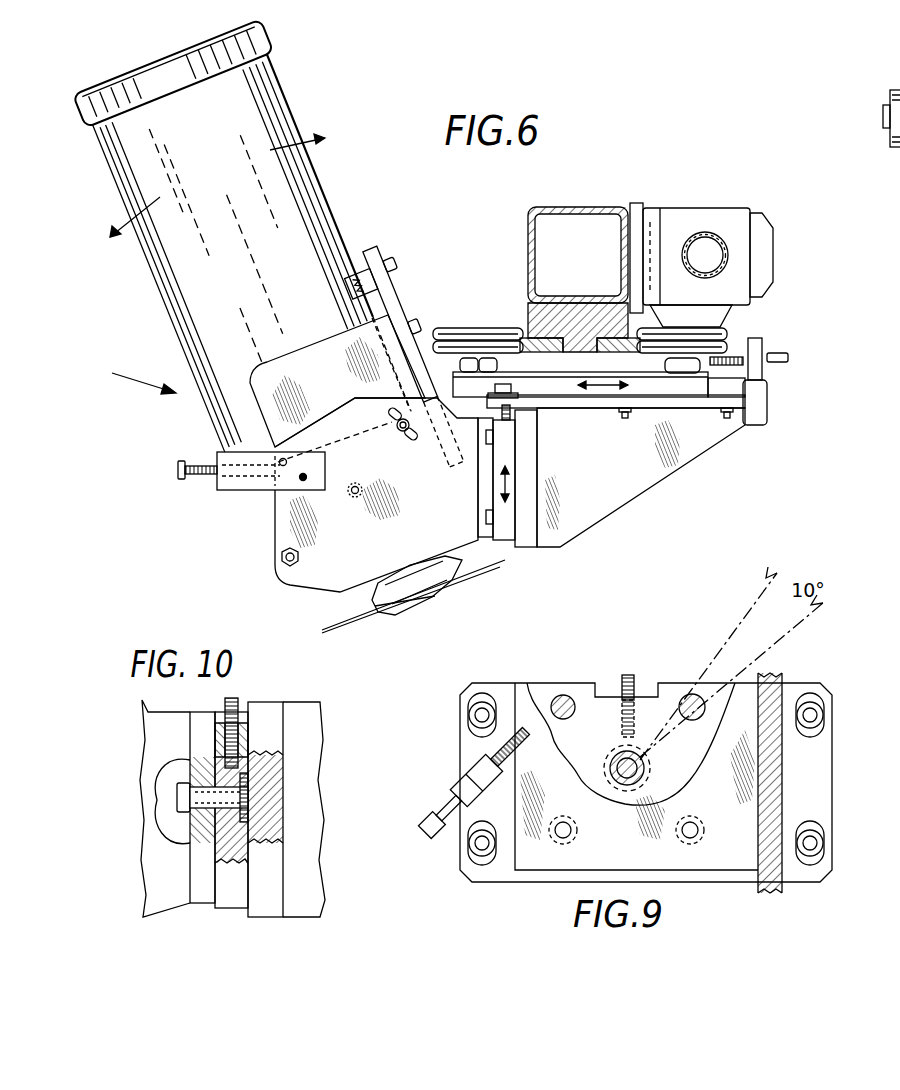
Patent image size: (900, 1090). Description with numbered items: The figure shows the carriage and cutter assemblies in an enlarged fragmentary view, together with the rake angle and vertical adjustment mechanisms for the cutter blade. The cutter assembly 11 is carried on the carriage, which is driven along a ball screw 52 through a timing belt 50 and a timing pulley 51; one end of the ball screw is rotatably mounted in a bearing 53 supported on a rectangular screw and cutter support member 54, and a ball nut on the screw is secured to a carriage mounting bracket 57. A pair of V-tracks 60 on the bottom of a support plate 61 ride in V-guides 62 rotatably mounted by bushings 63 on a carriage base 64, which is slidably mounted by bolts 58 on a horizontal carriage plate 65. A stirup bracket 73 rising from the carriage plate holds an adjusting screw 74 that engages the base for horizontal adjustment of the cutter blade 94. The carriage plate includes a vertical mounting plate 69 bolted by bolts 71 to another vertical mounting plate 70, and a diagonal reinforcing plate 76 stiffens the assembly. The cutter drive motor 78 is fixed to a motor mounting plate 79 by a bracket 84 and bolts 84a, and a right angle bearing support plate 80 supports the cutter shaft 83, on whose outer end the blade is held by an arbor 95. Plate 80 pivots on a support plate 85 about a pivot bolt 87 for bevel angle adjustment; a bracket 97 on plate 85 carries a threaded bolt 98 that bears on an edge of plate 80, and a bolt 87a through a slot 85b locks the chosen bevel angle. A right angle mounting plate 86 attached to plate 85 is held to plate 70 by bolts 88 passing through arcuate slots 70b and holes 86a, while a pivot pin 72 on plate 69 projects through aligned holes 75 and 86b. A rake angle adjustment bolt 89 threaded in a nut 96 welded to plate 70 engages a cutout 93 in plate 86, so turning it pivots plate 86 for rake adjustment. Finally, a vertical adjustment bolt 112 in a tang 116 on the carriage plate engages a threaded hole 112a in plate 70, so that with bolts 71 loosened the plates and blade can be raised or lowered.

In FIG. 6, the cutter assembly 11 is at (128, 378).
In FIG. 6, the timing belt 50 is at (899, 53).
In FIG. 6, the timing pulley 51 is at (896, 152).
In FIG. 6, the ball screw 52 is at (707, 246).
In FIG. 6, the bearing 53 is at (672, 218).
In FIG. 6, the screw and cutter support member 54 is at (592, 206).
In FIG. 6, the carriage mounting bracket 57 is at (774, 250).
In FIG. 6, the bolts 58 is at (727, 420).
In FIG. 6, the V-tracks 60 is at (560, 349).
In FIG. 6, the support plate 61 is at (592, 318).
In FIG. 6, the V-guides 62 is at (463, 340).
In FIG. 6, the bushings 63 is at (686, 374).
In FIG. 6, the carriage base 64 is at (665, 400).
In FIG. 6, the horizontal carriage plate 65 is at (590, 400).
In FIG. 6, the vertical mounting plate 69 is at (527, 470).
In FIG. 10, the vertical mounting plate 69 is at (270, 863).
In FIG. 6, the vertical mounting plate 70 is at (508, 525).
In FIG. 9, the vertical mounting plate 70 is at (537, 693).
In FIG. 10, the vertical mounting plate 70 is at (232, 878).
In FIG. 9, the arcuate shaped slots 70b is at (697, 722).
In FIG. 6, the bolts 71 is at (485, 518).
In FIG. 9, the bolts 71 is at (470, 708).
In FIG. 9, the pivot pin 72 is at (618, 778).
In FIG. 10, the pivot pin 72 is at (178, 797).
In FIG. 6, the stirup bracket 73 is at (766, 410).
In FIG. 6, the adjusting screw 74 is at (740, 372).
In FIG. 9, the hole 75 is at (645, 775).
In FIG. 10, the hole 75 is at (223, 812).
In FIG. 6, the reinforcing plate 76 is at (617, 488).
In FIG. 10, the reinforcing plate 76 is at (300, 737).
In FIG. 6, the cutter drive motor 78 is at (262, 113).
In FIG. 6, the motor mounting plate 79 is at (371, 250).
In FIG. 6, the right angle bearing support plate 80 is at (297, 378).
In FIG. 6, the cutter shaft 83 is at (412, 566).
In FIG. 6, the bracket 84 is at (345, 284).
In FIG. 6, the bolts 84a is at (397, 275).
In FIG. 6, the support plate 85 is at (339, 541).
In FIG. 9, the support plate 85 is at (782, 790).
In FIG. 10, the support plate 85 is at (162, 883).
In FIG. 6, the slot 85b is at (398, 420).
In FIG. 6, the right angle mounting plate 86 is at (485, 478).
In FIG. 9, the right angle mounting plate 86 is at (670, 860).
In FIG. 10, the right angle mounting plate 86 is at (200, 858).
In FIG. 9, the holes 86a is at (700, 836).
In FIG. 10, the hole 86b is at (172, 790).
In FIG. 6, the pivot bolt 87 is at (278, 562).
In FIG. 6, the bolt 87a is at (402, 436).
In FIG. 9, the bolts 88 is at (570, 715).
In FIG. 9, the rake angle adjustment bolt 89 is at (442, 808).
In FIG. 9, the cutout 93 is at (528, 752).
In FIG. 6, the cutter blade 94 is at (455, 580).
In FIG. 6, the arbor 95 is at (368, 598).
In FIG. 9, the nut 96 is at (470, 763).
In FIG. 6, the bracket 97 is at (265, 484).
In FIG. 6, the threaded bolt 98 is at (190, 480).
In FIG. 6, the vertical adjustment bolt 112 is at (512, 410).
In FIG. 9, the vertical adjustment bolt 112 is at (637, 685).
In FIG. 10, the vertical adjustment bolt 112 is at (233, 700).
In FIG. 10, the threaded hole 112a is at (215, 735).
In FIG. 6, the tang 116 is at (513, 400).